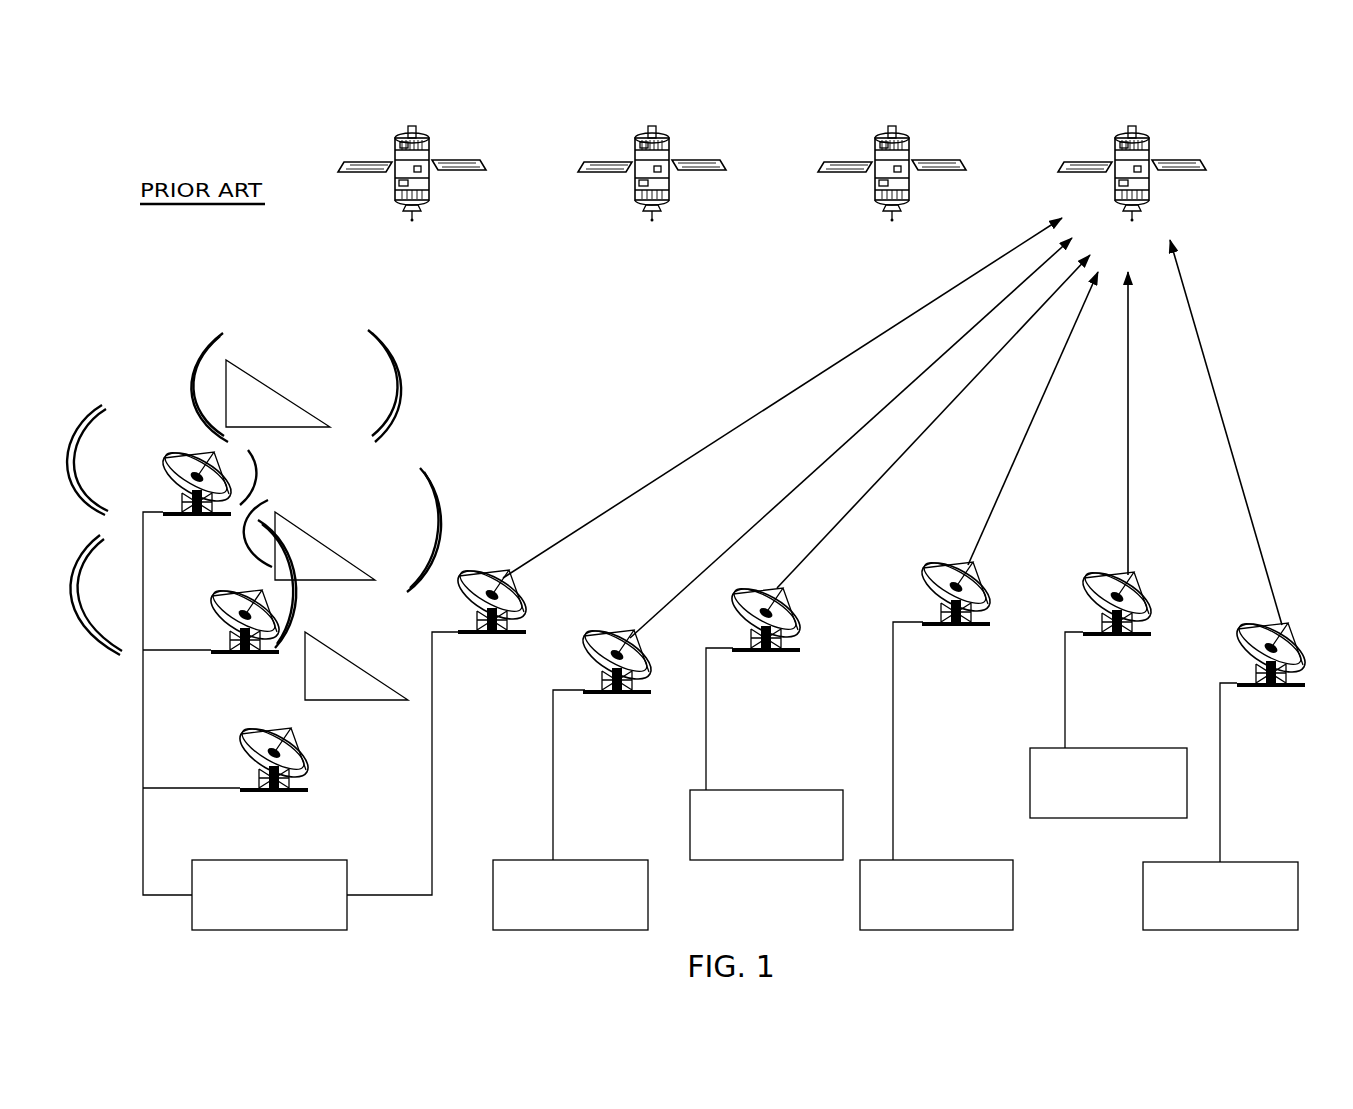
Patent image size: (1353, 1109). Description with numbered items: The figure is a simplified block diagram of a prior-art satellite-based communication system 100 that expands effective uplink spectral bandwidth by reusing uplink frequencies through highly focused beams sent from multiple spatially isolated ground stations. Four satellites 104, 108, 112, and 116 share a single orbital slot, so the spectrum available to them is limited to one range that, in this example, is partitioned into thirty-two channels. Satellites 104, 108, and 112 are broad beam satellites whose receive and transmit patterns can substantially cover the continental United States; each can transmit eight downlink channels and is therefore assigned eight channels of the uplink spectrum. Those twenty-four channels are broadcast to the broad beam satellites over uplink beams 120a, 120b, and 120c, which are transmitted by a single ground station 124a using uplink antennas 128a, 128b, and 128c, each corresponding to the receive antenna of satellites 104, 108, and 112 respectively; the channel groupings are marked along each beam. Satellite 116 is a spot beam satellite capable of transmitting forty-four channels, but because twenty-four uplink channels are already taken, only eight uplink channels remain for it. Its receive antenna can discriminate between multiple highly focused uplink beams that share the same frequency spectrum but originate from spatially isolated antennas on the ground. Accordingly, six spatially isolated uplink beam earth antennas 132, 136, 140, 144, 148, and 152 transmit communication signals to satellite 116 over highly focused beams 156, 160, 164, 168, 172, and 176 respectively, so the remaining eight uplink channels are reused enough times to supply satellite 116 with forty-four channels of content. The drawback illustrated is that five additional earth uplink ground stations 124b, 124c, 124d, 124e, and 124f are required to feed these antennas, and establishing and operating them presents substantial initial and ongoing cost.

The satellite-based communication system 100 is at (1278, 145).
The satellite 104 is at (418, 126).
The satellite 108 is at (658, 126).
The satellite 112 is at (898, 126).
The satellite 116 is at (1138, 122).
The uplink beam 120a is at (326, 650).
The uplink beam 120b is at (295, 524).
The uplink beam 120c is at (256, 379).
The ground station 124a is at (268, 860).
The earth uplink ground station 124b is at (555, 860).
The earth uplink ground station 124c is at (768, 790).
The earth uplink ground station 124d is at (937, 860).
The earth uplink ground station 124e is at (1110, 748).
The earth uplink ground station 124f is at (1222, 862).
The uplink antenna 128a is at (283, 730).
The uplink antenna 128b is at (253, 596).
The uplink antenna 128c is at (206, 453).
The uplink beam earth antenna 132 is at (527, 630).
The uplink beam earth antenna 136 is at (585, 693).
The uplink beam earth antenna 140 is at (800, 647).
The uplink beam earth antenna 144 is at (990, 626).
The uplink beam earth antenna 148 is at (1130, 576).
The uplink beam earth antenna 152 is at (1282, 626).
The highly focused beam 156 is at (850, 353).
The highly focused beam 160 is at (778, 503).
The highly focused beam 164 is at (922, 436).
The highly focused beam 168 is at (1019, 456).
The highly focused beam 172 is at (1129, 462).
The highly focused beam 176 is at (1205, 353).